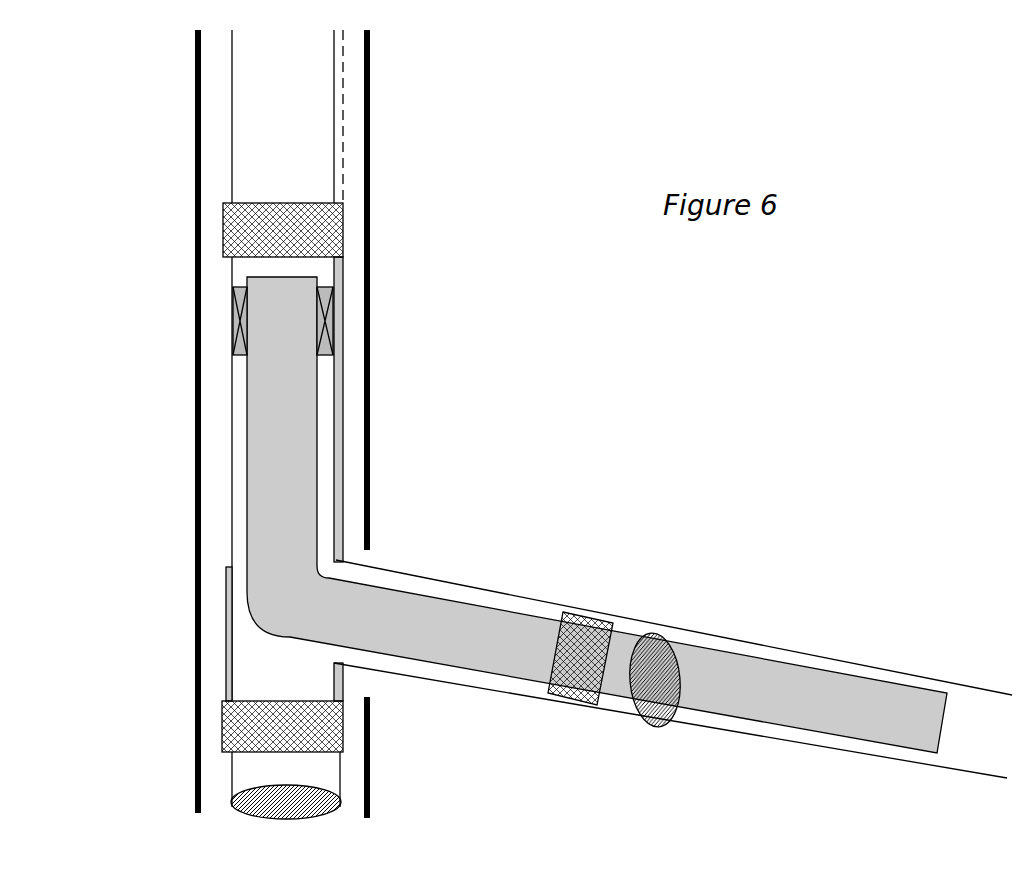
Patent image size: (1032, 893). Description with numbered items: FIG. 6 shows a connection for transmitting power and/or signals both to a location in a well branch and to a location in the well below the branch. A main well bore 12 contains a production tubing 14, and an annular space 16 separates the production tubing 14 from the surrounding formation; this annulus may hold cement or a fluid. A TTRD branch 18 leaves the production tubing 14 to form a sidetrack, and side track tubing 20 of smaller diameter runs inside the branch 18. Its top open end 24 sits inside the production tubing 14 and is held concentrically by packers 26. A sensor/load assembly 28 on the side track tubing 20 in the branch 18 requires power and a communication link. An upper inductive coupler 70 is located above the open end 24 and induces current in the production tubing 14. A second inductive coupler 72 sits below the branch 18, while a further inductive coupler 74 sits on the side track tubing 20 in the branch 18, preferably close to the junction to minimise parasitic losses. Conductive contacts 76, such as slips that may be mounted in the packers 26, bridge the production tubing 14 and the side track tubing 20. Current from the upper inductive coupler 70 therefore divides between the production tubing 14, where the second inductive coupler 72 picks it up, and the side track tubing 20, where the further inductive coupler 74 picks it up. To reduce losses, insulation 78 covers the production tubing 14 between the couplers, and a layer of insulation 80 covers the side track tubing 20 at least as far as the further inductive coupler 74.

The main well bore 12 is at (203, 648).
The production tubing 14 is at (231, 120).
The annular space 16 is at (203, 483).
The TTRD branch 18 is at (812, 650).
The side track tubing 20 is at (745, 740).
The top open end 24 is at (264, 270).
The packers 26 is at (233, 333).
The sensor/load assembly 28 is at (655, 725).
The upper inductive coupler 70 is at (223, 228).
The second inductive coupler 72 is at (222, 725).
The further inductive coupler 74 is at (590, 612).
The conductive contacts 76 is at (345, 322).
The insulation 78 is at (343, 545).
The insulation 80 is at (397, 595).